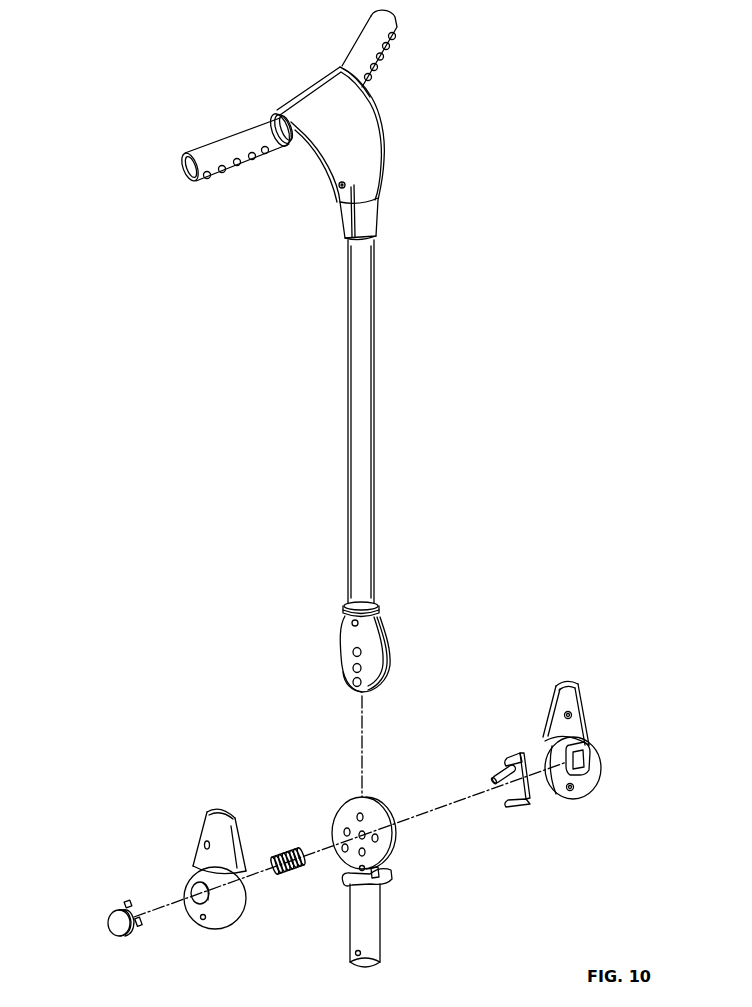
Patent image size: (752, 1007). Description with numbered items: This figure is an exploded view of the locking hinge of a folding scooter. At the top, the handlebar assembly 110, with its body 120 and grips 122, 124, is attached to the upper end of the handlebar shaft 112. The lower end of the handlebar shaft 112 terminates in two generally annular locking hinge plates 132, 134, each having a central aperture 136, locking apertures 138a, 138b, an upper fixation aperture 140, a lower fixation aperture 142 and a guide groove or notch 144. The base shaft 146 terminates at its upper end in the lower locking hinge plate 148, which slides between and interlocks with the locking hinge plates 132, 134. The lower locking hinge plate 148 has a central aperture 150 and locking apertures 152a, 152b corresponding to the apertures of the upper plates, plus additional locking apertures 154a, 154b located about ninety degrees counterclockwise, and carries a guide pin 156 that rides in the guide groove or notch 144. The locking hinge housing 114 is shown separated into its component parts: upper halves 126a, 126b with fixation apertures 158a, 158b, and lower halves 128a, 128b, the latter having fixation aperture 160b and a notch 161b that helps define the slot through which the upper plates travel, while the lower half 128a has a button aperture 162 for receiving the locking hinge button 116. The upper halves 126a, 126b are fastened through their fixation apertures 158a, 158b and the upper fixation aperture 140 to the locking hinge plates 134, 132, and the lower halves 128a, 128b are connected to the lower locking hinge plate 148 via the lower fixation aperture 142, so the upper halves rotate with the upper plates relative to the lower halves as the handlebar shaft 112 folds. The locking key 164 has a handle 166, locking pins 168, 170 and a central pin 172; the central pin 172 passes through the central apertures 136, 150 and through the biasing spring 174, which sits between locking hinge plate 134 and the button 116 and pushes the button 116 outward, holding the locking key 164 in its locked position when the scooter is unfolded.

The handlebar assembly 110 is at (228, 66).
The handlebar shaft 112 is at (368, 421).
The locking hinge housing 114 is at (186, 782).
The locking hinge button 116 is at (120, 908).
The body 120 is at (380, 134).
The grip 122 is at (218, 137).
The grip 124 is at (389, 51).
The upper half of locking hinge housing 126a is at (210, 832).
The upper half of locking hinge housing 126b is at (585, 703).
The lower half of locking hinge housing 128a is at (190, 878).
The lower half of locking hinge housing 128b is at (600, 768).
The locking hinge plate 132 is at (393, 663).
The locking hinge plate 134 is at (374, 668).
The central aperture 136 is at (352, 667).
The locking aperture 138a is at (363, 650).
The locking aperture 138b is at (361, 683).
The upper fixation aperture 140 is at (343, 619).
The guide groove or notch 144 is at (342, 672).
The lower fixation aperture 142 is at (364, 872).
The base shaft 146 is at (380, 935).
The lower locking hinge plate 148 is at (393, 853).
The central aperture 150 is at (387, 810).
The locking aperture 152a is at (364, 815).
The locking aperture 152b is at (366, 853).
The locking aperture 154a is at (378, 838).
The locking aperture 154b is at (343, 832).
The guide pin 156 is at (345, 858).
The fixation aperture 158a is at (202, 850).
The fixation aperture 158b is at (565, 713).
The fixation aperture 160b is at (571, 794).
The notch 161b is at (553, 778).
The button aperture 162 is at (198, 903).
The locking key 164 is at (487, 747).
The handle 166 is at (528, 790).
The locking pin 168 is at (513, 753).
The locking pin 170 is at (508, 802).
The central pin 172 is at (490, 783).
The biasing spring 174 is at (292, 877).